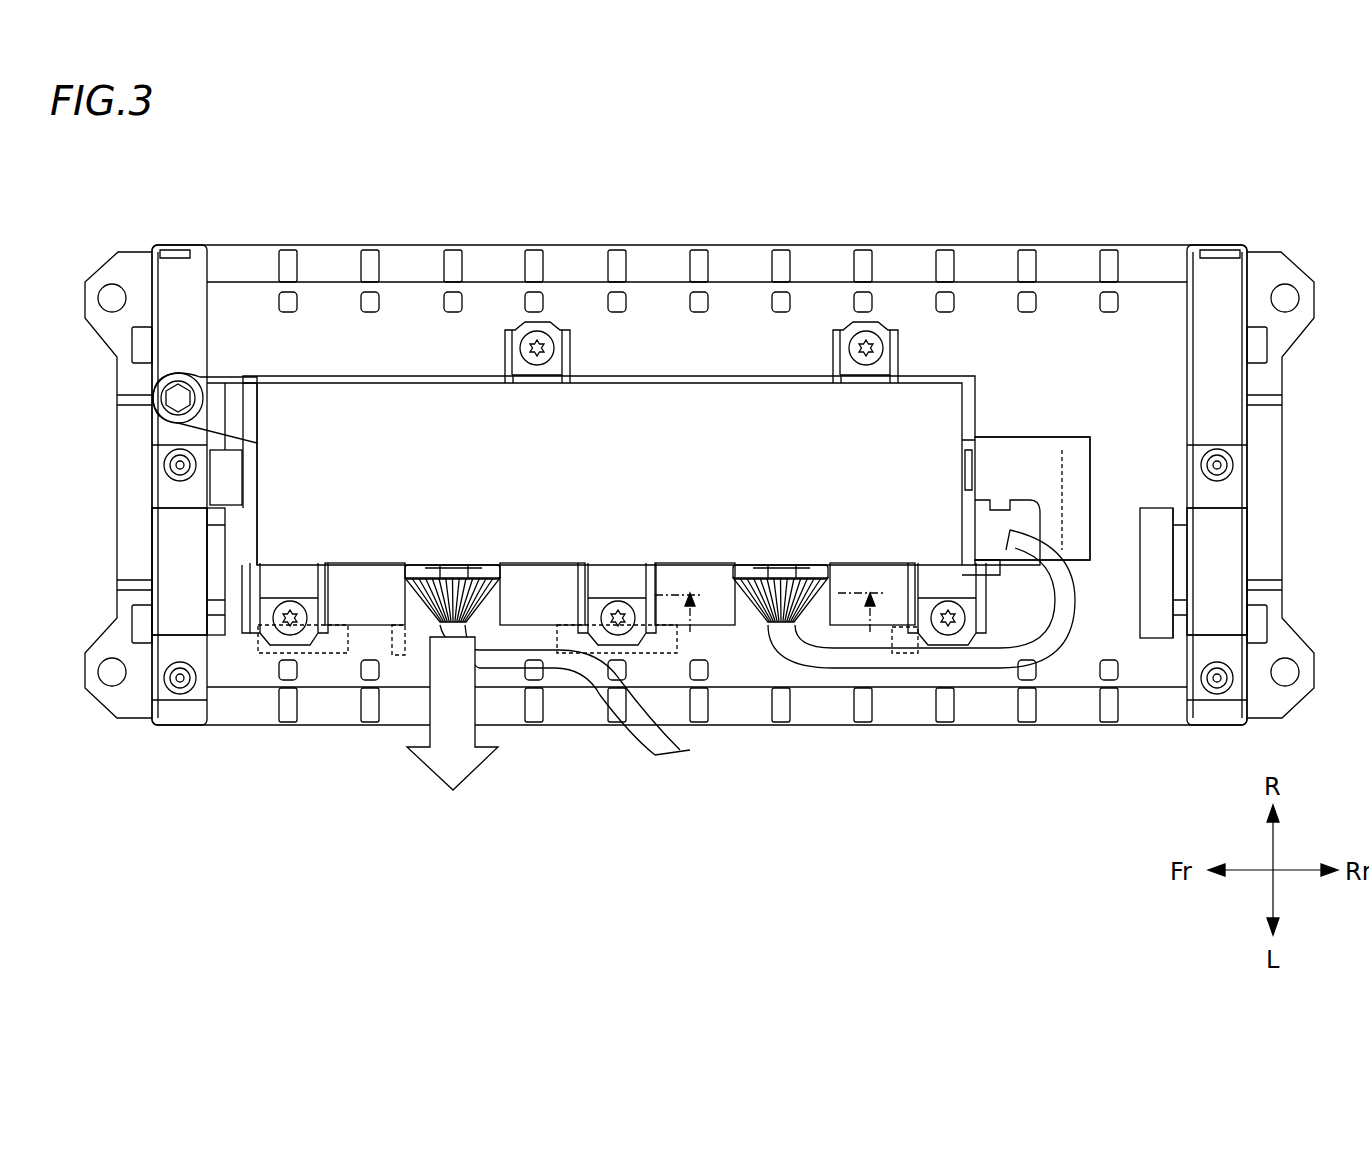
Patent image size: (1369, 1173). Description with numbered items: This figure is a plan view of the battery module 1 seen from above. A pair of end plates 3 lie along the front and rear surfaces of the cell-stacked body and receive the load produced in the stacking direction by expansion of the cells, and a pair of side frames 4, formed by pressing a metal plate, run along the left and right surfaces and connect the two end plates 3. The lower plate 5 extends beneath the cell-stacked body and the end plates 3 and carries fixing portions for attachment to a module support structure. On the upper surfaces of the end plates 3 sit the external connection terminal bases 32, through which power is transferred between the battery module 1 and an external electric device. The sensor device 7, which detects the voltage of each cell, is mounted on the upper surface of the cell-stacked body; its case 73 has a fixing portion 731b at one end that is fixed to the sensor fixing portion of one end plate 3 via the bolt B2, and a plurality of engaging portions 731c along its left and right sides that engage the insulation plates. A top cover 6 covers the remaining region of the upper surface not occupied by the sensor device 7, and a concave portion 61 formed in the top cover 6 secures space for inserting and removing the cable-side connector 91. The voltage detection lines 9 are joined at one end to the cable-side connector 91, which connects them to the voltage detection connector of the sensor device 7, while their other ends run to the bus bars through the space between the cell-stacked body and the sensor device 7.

The battery module 1 is at (1328, 200).
The end plate 3 is at (180, 280).
The side frame 4 is at (1080, 243).
The lower plate 5 is at (105, 522).
The top cover 6 is at (1122, 362).
The sensor device 7 is at (418, 378).
The case 73 is at (648, 515).
The fixing portion 731b is at (176, 373).
The engaging portion 731c is at (540, 343).
The voltage detection line 9 is at (582, 665).
The cable-side connector 91 is at (448, 625).
The concave portion 61 is at (420, 640).
The external connection terminal base 32 is at (170, 588).
The bolt B2 is at (160, 405).